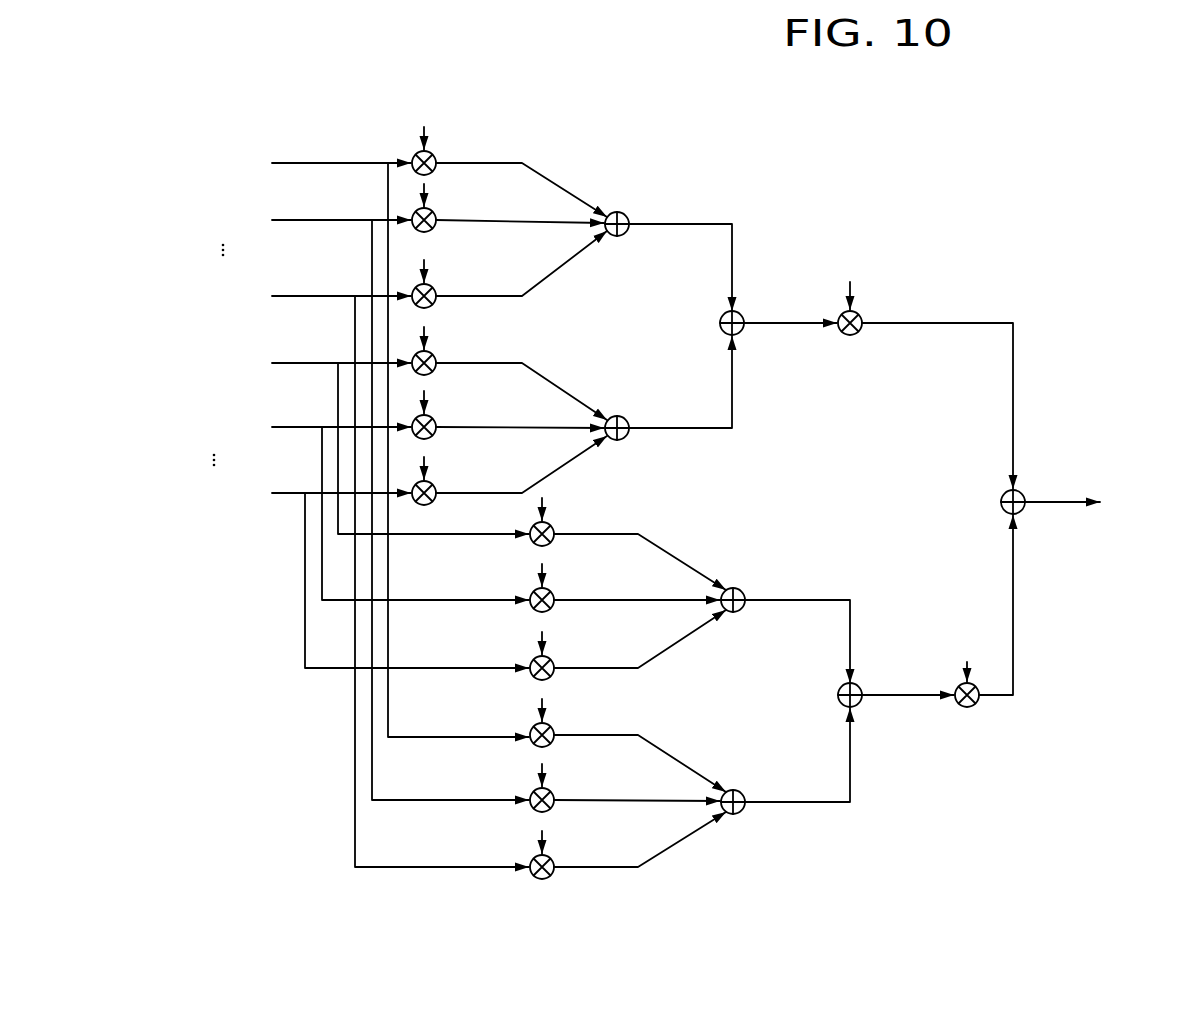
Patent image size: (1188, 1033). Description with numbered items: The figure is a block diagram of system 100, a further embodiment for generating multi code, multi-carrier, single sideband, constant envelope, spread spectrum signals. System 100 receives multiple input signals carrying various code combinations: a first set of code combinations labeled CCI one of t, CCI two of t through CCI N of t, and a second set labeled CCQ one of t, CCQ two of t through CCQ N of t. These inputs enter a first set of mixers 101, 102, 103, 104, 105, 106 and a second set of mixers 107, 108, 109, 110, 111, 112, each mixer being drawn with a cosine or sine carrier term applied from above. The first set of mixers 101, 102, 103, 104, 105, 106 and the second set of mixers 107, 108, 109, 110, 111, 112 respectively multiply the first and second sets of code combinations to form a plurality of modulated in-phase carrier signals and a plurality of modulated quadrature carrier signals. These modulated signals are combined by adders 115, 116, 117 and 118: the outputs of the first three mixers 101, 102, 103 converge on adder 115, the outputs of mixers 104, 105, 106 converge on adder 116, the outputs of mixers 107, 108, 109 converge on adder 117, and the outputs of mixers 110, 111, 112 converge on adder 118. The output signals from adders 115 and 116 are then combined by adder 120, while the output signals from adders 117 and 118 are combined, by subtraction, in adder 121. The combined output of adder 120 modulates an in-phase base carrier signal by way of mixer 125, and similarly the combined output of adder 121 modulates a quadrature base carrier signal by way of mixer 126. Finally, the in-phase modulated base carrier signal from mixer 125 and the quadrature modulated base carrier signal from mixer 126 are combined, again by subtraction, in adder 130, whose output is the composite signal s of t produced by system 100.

The system 100 is at (1147, 170).
The mixer 101 is at (477, 177).
The mixer 102 is at (485, 243).
The mixer 103 is at (485, 310).
The mixer 104 is at (485, 378).
The mixer 105 is at (485, 444).
The mixer 106 is at (465, 507).
The mixer 107 is at (587, 548).
The mixer 108 is at (587, 617).
The mixer 109 is at (587, 686).
The mixer 110 is at (587, 750).
The mixer 111 is at (590, 815).
The mixer 112 is at (587, 900).
The adder 115 is at (667, 185).
The adder 116 is at (667, 385).
The adder 117 is at (785, 558).
The adder 118 is at (760, 757).
The adder 120 is at (785, 370).
The adder 121 is at (900, 758).
The mixer 125 is at (893, 362).
The mixer 126 is at (1035, 760).
The adder 130 is at (1085, 548).